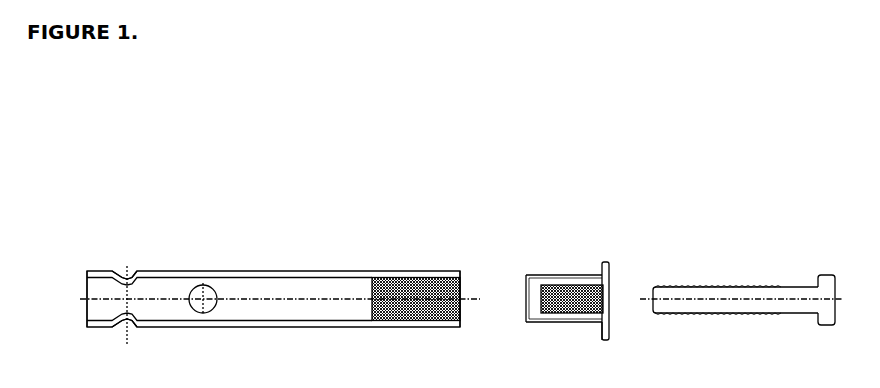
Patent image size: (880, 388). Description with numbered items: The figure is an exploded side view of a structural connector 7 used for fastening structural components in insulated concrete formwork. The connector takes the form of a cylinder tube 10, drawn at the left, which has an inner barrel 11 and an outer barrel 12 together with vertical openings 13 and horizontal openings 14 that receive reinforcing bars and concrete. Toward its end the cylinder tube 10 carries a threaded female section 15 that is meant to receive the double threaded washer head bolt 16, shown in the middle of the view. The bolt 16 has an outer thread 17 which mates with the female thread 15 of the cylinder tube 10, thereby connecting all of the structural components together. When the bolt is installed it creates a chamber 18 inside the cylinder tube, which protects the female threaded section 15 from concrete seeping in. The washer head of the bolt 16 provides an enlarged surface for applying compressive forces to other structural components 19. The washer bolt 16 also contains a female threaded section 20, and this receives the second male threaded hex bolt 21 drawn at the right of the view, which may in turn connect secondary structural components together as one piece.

The structural connector 7 is at (268, 269).
The cylinder tube 10 is at (332, 271).
The inner barrel 11 is at (90, 327).
The outer barrel 12 is at (95, 272).
The vertical openings 13 is at (128, 317).
The horizontal openings 14 is at (213, 288).
The threaded female section 15 is at (463, 306).
The double threaded washer head bolt 16 is at (525, 320).
The outer thread 17 is at (547, 275).
The chamber 18 is at (372, 322).
The other structural components 19 is at (607, 333).
The female threaded section 20 is at (603, 285).
The second male threaded hex bolt 21 is at (713, 287).